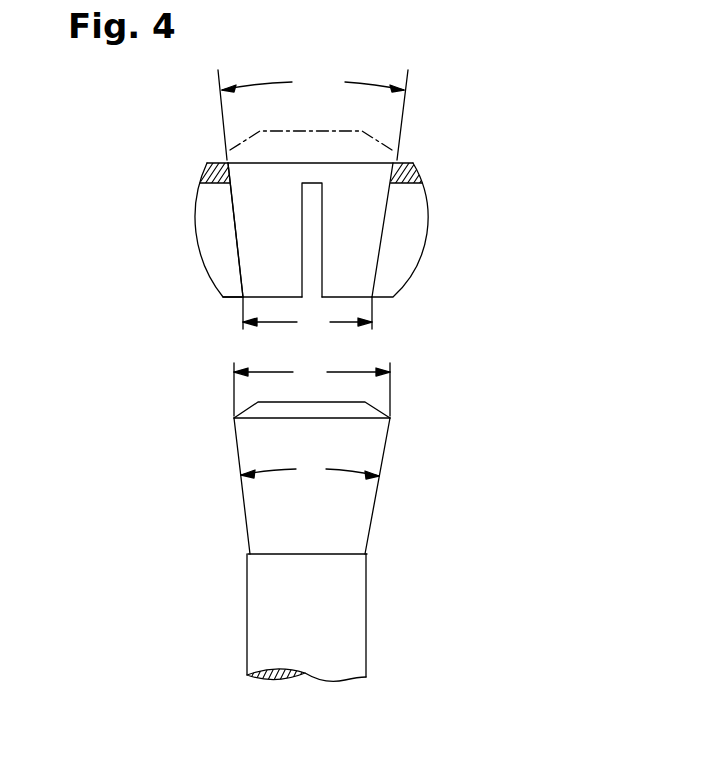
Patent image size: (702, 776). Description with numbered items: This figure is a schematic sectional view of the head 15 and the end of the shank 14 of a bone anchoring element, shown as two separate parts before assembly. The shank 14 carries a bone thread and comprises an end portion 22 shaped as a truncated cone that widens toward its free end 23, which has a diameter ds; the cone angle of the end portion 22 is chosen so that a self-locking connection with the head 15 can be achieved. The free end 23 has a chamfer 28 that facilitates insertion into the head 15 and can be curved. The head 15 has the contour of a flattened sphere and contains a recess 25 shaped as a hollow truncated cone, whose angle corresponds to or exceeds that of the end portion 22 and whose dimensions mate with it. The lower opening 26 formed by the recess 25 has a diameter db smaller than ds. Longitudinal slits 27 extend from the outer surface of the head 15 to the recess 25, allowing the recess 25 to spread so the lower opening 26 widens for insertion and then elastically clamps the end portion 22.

The shank 14 is at (345, 625).
The head 15 is at (425, 210).
The end portion 22 is at (377, 503).
The free end 23 is at (390, 418).
The recess 25 is at (241, 217).
The lower opening 26 is at (241, 300).
The longitudinal slits 27 is at (313, 232).
The chamfer 28 is at (236, 417).